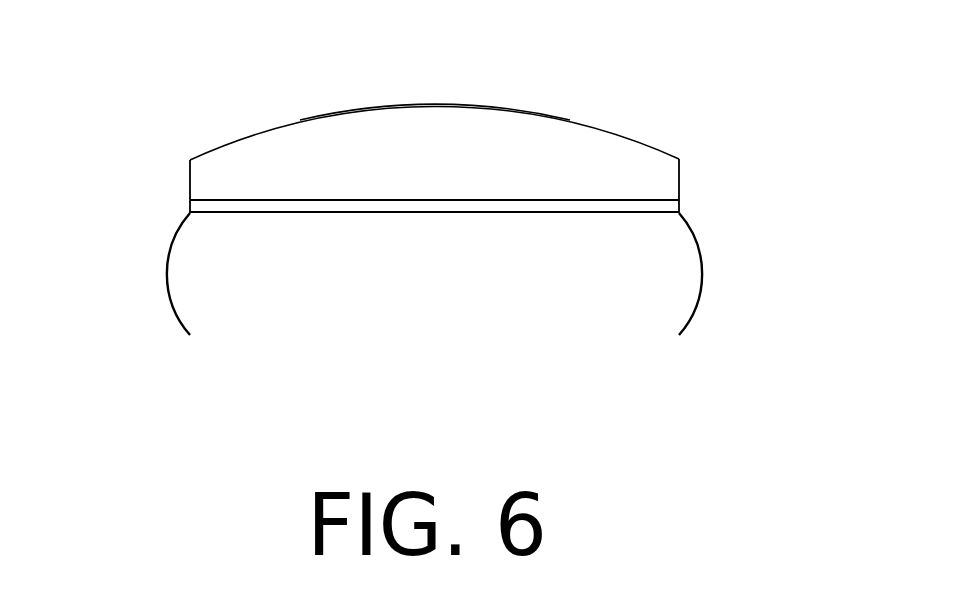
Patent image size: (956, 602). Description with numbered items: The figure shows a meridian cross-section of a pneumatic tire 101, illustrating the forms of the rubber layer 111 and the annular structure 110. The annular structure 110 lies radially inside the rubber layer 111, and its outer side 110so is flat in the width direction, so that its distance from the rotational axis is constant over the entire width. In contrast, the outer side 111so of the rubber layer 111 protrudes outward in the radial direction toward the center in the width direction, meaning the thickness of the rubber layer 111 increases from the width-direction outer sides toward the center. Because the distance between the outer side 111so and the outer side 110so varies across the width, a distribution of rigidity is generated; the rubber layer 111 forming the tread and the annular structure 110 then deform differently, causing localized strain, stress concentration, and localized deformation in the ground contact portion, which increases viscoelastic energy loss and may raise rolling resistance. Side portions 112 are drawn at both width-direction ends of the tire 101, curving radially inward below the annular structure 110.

The tire 101 is at (435, 178).
The annular structure 110 is at (435, 207).
The outer side of the annular structure 110so is at (353, 198).
The rubber layer 111 is at (435, 122).
The outer side of the rubber layer 111so is at (527, 114).
The side curved portion 112 is at (167, 274).